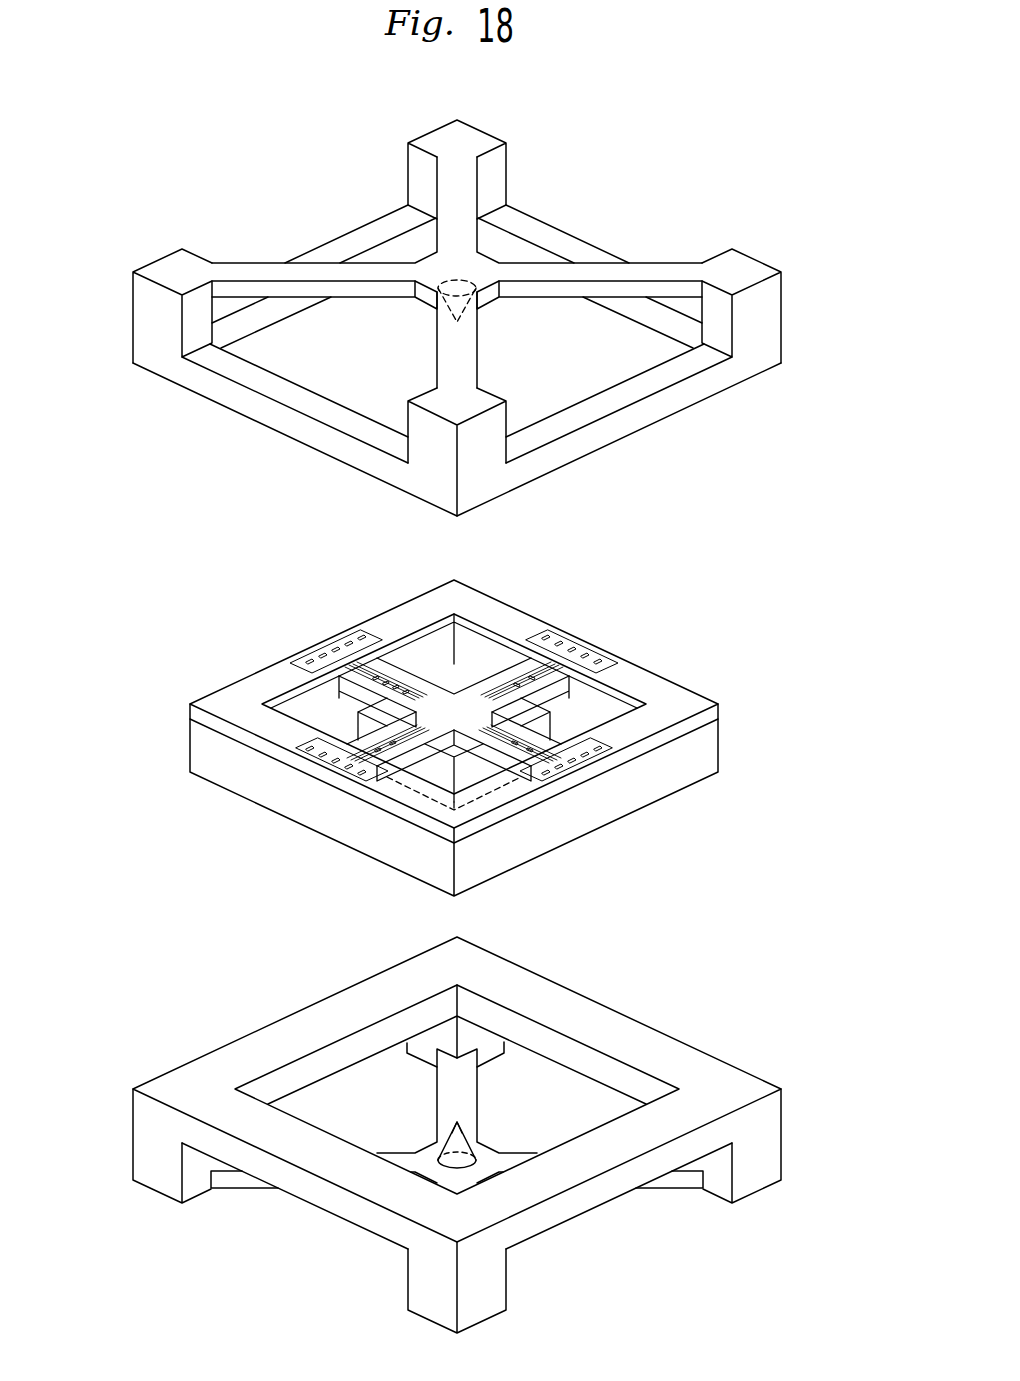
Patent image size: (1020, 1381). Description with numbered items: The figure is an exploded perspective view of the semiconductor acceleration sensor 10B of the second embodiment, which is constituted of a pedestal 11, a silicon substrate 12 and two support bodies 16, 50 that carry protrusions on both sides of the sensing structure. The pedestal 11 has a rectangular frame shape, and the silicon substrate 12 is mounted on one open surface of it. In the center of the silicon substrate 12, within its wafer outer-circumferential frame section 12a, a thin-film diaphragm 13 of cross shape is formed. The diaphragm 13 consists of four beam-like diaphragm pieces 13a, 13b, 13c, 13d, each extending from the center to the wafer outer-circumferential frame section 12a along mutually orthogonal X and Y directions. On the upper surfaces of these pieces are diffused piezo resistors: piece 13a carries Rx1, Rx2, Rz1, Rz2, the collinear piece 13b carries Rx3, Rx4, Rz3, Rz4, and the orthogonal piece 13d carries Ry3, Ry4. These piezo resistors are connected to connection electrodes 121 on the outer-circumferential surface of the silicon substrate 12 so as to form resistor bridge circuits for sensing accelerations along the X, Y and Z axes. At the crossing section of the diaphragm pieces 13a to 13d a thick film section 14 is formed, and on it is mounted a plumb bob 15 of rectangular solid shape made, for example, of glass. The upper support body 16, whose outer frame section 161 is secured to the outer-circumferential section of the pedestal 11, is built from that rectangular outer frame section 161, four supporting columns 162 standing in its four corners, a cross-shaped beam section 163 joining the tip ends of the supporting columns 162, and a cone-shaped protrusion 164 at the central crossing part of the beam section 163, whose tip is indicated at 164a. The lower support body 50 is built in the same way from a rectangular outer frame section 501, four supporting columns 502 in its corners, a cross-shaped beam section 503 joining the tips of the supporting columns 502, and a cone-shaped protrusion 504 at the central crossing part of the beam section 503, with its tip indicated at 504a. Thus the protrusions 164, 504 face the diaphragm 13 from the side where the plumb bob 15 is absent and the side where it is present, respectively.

The support body 16 is at (461, 307).
The outer frame section 161 is at (358, 240).
The supporting columns 162 is at (506, 158).
The beam section 163 is at (330, 277).
The protrusion 164 is at (440, 284).
The tip of projection 164a is at (459, 323).
The semiconductor acceleration sensor 10B is at (440, 651).
The pedestal 11 is at (713, 760).
The silicon substrate 12 is at (172, 719).
The wafer outer-circumferential frame section 12a is at (240, 740).
The diaphragm 13 is at (421, 738).
The diaphragm piece 13a is at (583, 780).
The diaphragm piece 13b is at (357, 632).
The diaphragm piece 13c is at (548, 640).
The diaphragm piece 13d is at (303, 758).
The thick film section 14 is at (517, 703).
The plumb bob 15 is at (432, 767).
The connection electrode 121 is at (342, 640).
The piezo resistor Rx1 is at (633, 713).
The piezo resistor Rx2 is at (583, 700).
The piezo resistor Rx3 is at (343, 697).
The piezo resistor Rx4 is at (323, 687).
The piezo resistor Ry3 is at (377, 763).
The piezo resistor Ry4 is at (340, 770).
The piezo resistor Rz1 is at (537, 760).
The piezo resistor Rz2 is at (513, 750).
The piezo resistor Rz3 is at (406, 684).
The piezo resistor Rz4 is at (378, 670).
The support body 50 is at (458, 1131).
The outer frame section 501 is at (300, 1018).
The supporting columns 502 is at (477, 1040).
The beam section 503 is at (445, 1093).
The protrusion 504 is at (440, 1147).
The tip of projection 504a is at (463, 1122).